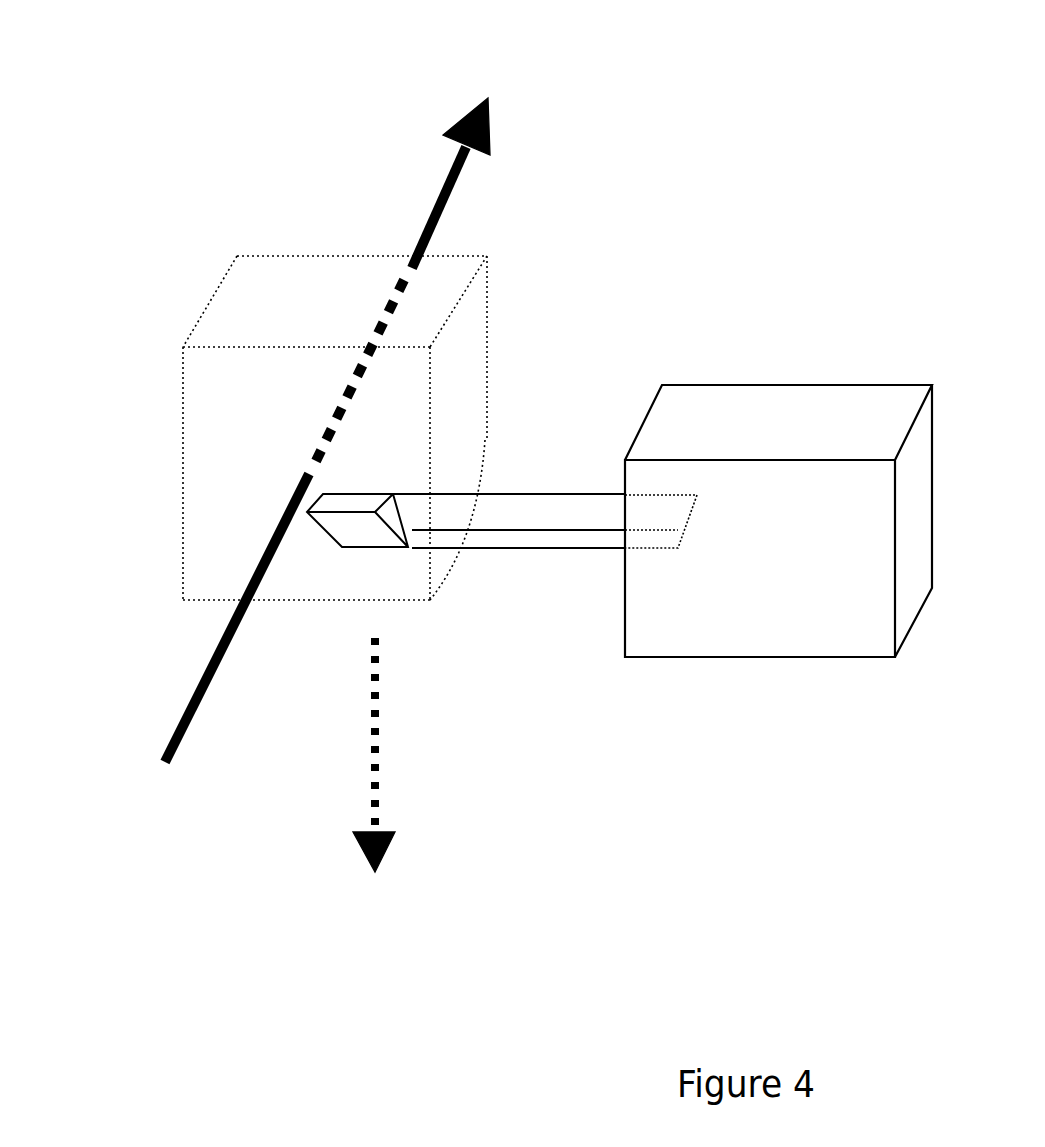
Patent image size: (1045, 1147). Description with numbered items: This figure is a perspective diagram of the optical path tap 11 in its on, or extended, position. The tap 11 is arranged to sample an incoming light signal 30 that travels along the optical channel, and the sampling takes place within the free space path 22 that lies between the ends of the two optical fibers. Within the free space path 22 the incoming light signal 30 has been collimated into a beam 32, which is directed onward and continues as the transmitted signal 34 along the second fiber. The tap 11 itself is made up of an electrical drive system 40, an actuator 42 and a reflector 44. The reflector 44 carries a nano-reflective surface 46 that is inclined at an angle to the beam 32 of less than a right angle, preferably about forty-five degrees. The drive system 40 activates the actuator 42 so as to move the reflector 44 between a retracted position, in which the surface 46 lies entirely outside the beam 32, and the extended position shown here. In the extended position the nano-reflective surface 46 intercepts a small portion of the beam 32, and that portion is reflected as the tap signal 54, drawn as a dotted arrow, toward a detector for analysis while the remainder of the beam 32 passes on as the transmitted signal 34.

The optical path tap 11 is at (852, 178).
The free space path 22 is at (257, 383).
The incoming light signal 30 is at (198, 672).
The beam 32 is at (347, 407).
The transmitted signal 34 is at (437, 190).
The electrical drive system 40 is at (748, 565).
The actuator 42 is at (553, 512).
The reflector 44 is at (343, 493).
The nano-reflective surface 46 is at (358, 530).
The tap signal 54 is at (370, 753).